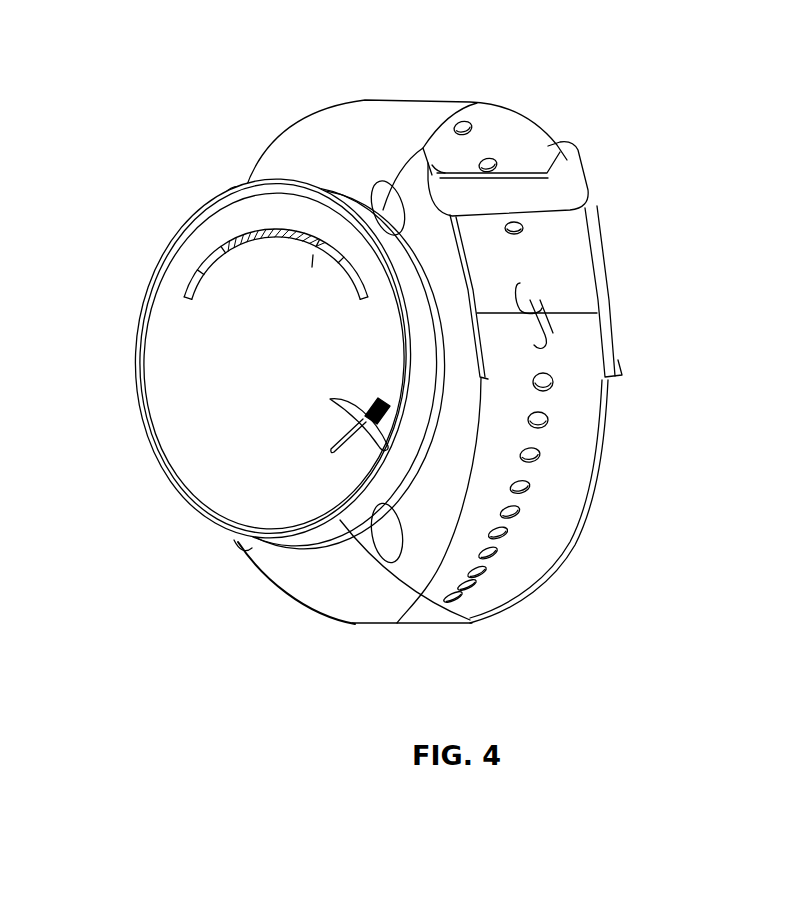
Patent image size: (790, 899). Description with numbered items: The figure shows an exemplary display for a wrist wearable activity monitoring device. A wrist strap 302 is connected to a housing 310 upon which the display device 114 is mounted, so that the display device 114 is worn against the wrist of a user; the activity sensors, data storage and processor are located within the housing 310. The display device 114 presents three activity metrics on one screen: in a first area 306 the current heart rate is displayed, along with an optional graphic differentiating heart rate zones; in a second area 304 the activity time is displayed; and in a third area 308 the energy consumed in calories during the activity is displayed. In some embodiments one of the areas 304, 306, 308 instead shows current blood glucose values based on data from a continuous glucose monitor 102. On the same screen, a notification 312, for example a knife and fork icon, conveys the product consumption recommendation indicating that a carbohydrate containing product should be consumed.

The continuous glucose monitor 102 is at (212, 40).
The display device 114 is at (247, 493).
The wrist strap 302 is at (570, 457).
The second area 304 is at (177, 363).
The first area 306 is at (230, 293).
The third area 308 is at (240, 427).
The housing 310 is at (405, 441).
The notification 312 is at (344, 456).